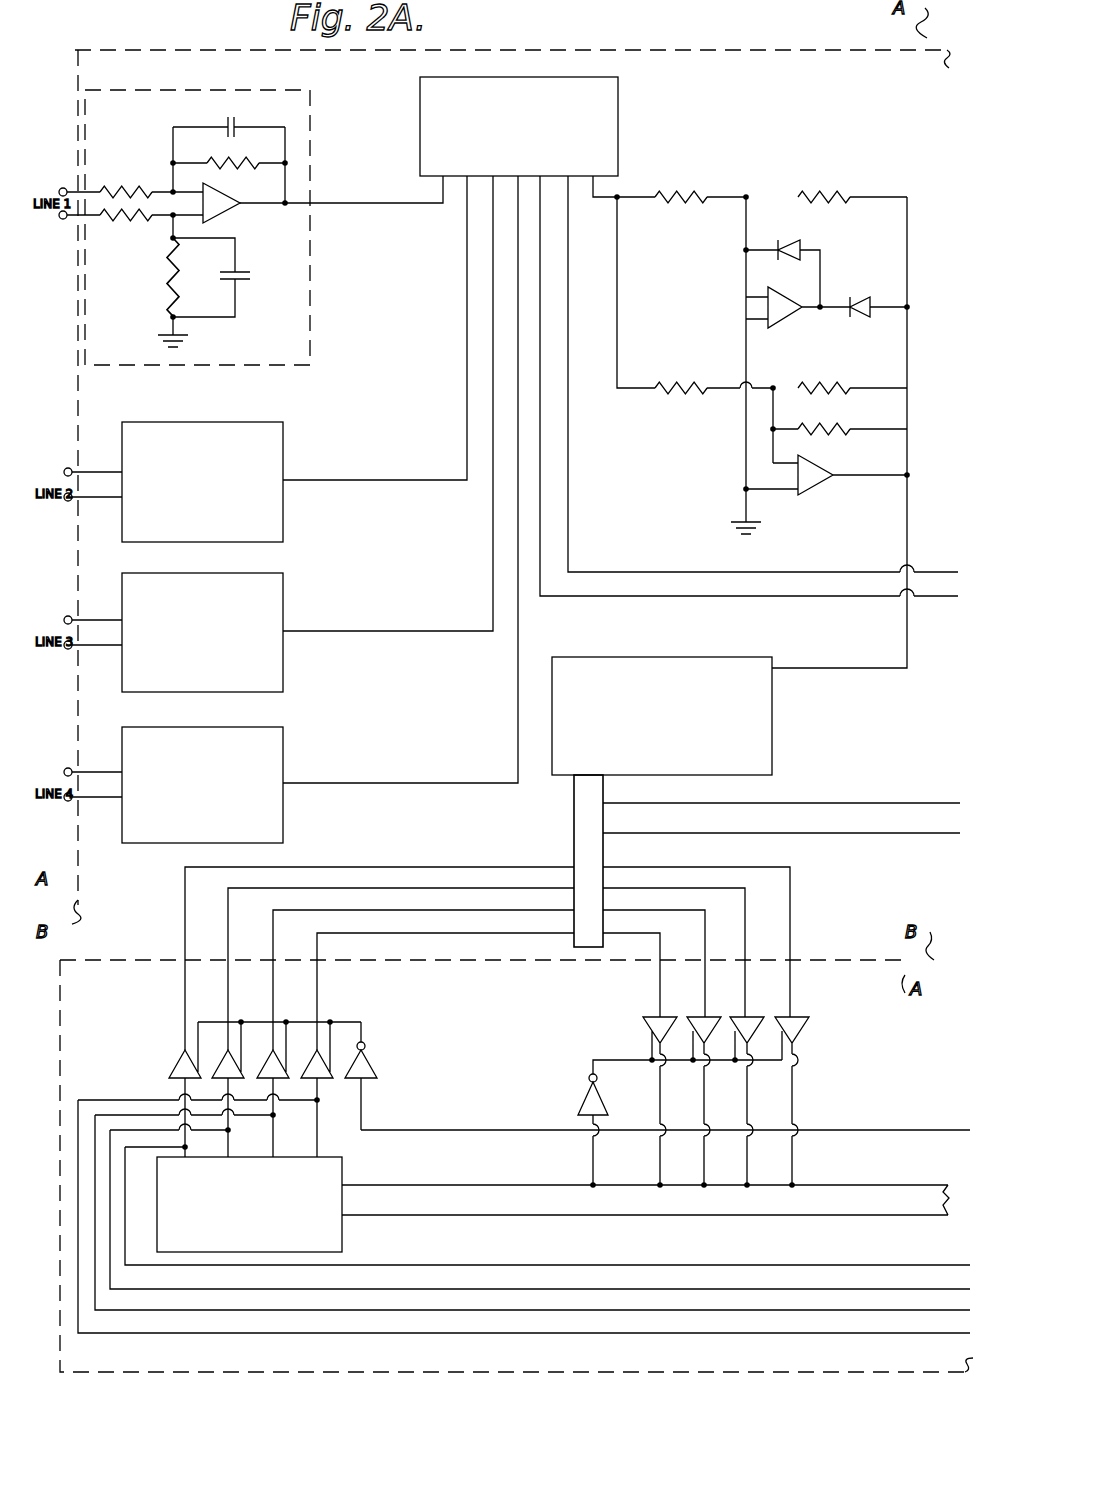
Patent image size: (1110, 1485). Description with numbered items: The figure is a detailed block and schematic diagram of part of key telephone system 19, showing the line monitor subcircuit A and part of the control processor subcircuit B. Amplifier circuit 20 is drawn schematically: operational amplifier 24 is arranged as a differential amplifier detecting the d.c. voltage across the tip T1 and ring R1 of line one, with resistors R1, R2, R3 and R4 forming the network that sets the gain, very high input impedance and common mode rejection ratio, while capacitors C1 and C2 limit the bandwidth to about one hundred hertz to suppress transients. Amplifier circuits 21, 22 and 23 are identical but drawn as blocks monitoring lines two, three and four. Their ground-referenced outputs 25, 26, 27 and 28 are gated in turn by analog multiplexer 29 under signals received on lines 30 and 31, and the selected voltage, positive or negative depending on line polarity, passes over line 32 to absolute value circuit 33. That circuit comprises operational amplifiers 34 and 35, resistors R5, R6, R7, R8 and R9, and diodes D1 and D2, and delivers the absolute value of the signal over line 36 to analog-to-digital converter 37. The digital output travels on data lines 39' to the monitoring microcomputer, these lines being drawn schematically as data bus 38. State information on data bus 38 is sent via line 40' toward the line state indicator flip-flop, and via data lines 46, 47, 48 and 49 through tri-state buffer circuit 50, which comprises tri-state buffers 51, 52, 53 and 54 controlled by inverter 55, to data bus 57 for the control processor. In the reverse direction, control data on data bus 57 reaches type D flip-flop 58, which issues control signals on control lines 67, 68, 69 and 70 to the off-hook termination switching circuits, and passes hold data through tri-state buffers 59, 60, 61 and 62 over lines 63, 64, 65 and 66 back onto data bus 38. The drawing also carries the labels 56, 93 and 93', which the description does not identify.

The key telephone system 19 is at (731, 42).
The amplifier circuit 20 is at (322, 143).
The amplifier circuit 21 is at (288, 442).
The amplifier circuit 22 is at (290, 602).
The amplifier circuit 23 is at (290, 760).
The operational amplifier 24 is at (227, 214).
The amplifier output 25 is at (354, 210).
The amplifier output 26 is at (467, 277).
The amplifier output 27 is at (493, 318).
The amplifier output 28 is at (518, 352).
The analog multiplexer 29 is at (626, 86).
The line 30 is at (680, 572).
The line 31 is at (690, 596).
The line 32 is at (638, 198).
The absolute value circuit 33 is at (879, 188).
The operational amplifier 34 is at (786, 318).
The operational amplifier 35 is at (807, 494).
The line 36 is at (907, 540).
The analog-to-digital converter 37 is at (778, 736).
The data bus 38 is at (572, 822).
The data lines 39' is at (781, 848).
The line 40' is at (781, 785).
The data line 46 is at (690, 940).
The data line 47 is at (706, 910).
The data line 48 is at (747, 894).
The data line 49 is at (802, 868).
The tri-state buffer circuit 50 is at (810, 1038).
The tri-state buffer 51 is at (648, 1024).
The tri-state buffer 52 is at (700, 1017).
The tri-state buffer 53 is at (746, 1017).
The tri-state buffer 54 is at (798, 1017).
The inverter 55 is at (582, 1100).
The tri-state buffer group 56 is at (370, 1032).
The data bus 57 is at (904, 1184).
The type D flip-flop 58 is at (346, 1172).
The tri-state buffer 59 is at (302, 1049).
The tri-state buffer 60 is at (257, 1049).
The tri-state buffer 61 is at (212, 1055).
The tri-state buffer 62 is at (168, 1058).
The line 63 is at (470, 933).
The line 64 is at (423, 910).
The line 65 is at (373, 888).
The line 66 is at (337, 850).
The control line 67 is at (947, 1264).
The control line 68 is at (923, 1284).
The control line 69 is at (932, 1310).
The control line 70 is at (854, 1332).
The inverter 93 is at (314, 1076).
The enable line 93' is at (665, 1109).
The tip of line 1 T1 is at (58, 189).
The resistor R1 is at (125, 188).
The resistor R2 is at (114, 222).
The resistor R3 is at (236, 166).
The resistor R4 is at (164, 284).
The resistor R5 is at (684, 184).
The resistor R6 is at (838, 194).
The resistor R7 is at (678, 386).
The resistor R8 is at (825, 386).
The resistor R9 is at (836, 426).
The capacitor C1 is at (224, 118).
The capacitor C2 is at (246, 283).
The diode D1 is at (793, 236).
The diode D2 is at (846, 297).